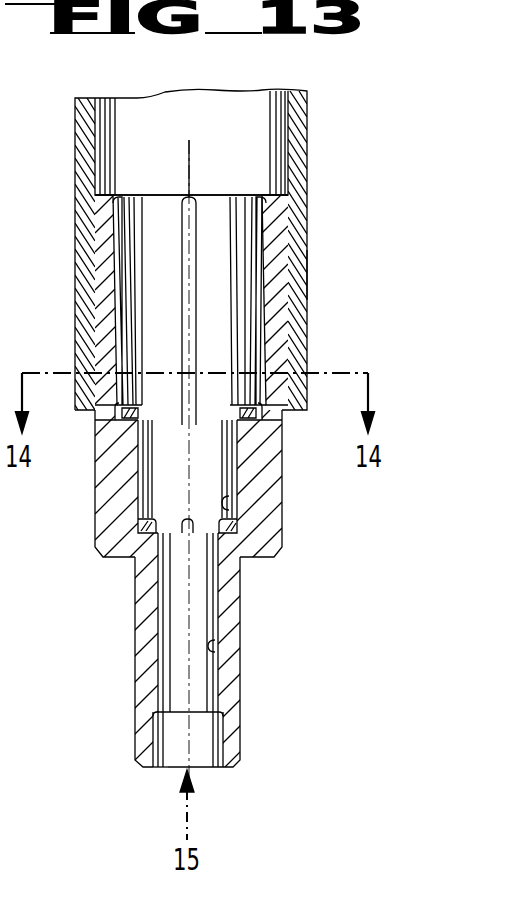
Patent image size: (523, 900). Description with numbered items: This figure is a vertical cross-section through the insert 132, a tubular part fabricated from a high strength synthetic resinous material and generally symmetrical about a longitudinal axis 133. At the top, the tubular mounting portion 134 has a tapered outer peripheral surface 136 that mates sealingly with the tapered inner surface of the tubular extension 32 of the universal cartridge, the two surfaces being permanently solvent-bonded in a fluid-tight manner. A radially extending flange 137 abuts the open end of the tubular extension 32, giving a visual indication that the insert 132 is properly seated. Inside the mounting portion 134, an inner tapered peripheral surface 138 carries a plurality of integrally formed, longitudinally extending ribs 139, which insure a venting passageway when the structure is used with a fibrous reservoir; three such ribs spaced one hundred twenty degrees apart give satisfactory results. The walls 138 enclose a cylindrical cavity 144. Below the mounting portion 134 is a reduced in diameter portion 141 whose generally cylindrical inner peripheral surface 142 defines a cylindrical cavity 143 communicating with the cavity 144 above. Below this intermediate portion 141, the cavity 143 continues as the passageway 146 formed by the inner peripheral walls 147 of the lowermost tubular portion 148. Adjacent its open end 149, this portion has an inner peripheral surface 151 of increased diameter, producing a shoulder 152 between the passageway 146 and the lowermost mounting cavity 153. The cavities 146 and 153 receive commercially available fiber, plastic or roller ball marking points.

The tubular extension 32 is at (300, 133).
The insert 132 is at (326, 345).
The longitudinal axis 133 is at (192, 176).
The tubular mounting portion 134 is at (297, 238).
The tapered outer peripheral surface 136 is at (297, 278).
The radially extending flange 137 is at (290, 412).
The inner tapered peripheral surface 138 is at (118, 282).
The longitudinally extending ribs 139 is at (184, 302).
The reduced in diameter portion 141 is at (283, 478).
The cylindrical inner peripheral surface 142 is at (232, 508).
The cylindrical cavity 143 is at (191, 487).
The cylindrical cavity 144 is at (180, 331).
The passageway or cavity 146 is at (206, 632).
The inner peripheral walls 147 is at (214, 646).
The lowermost tubular portion 148 is at (240, 613).
The open end 149 is at (200, 770).
The inner peripheral surface 151 is at (214, 742).
The shoulder 152 is at (196, 714).
The lowermost mounting cavity 153 is at (175, 742).